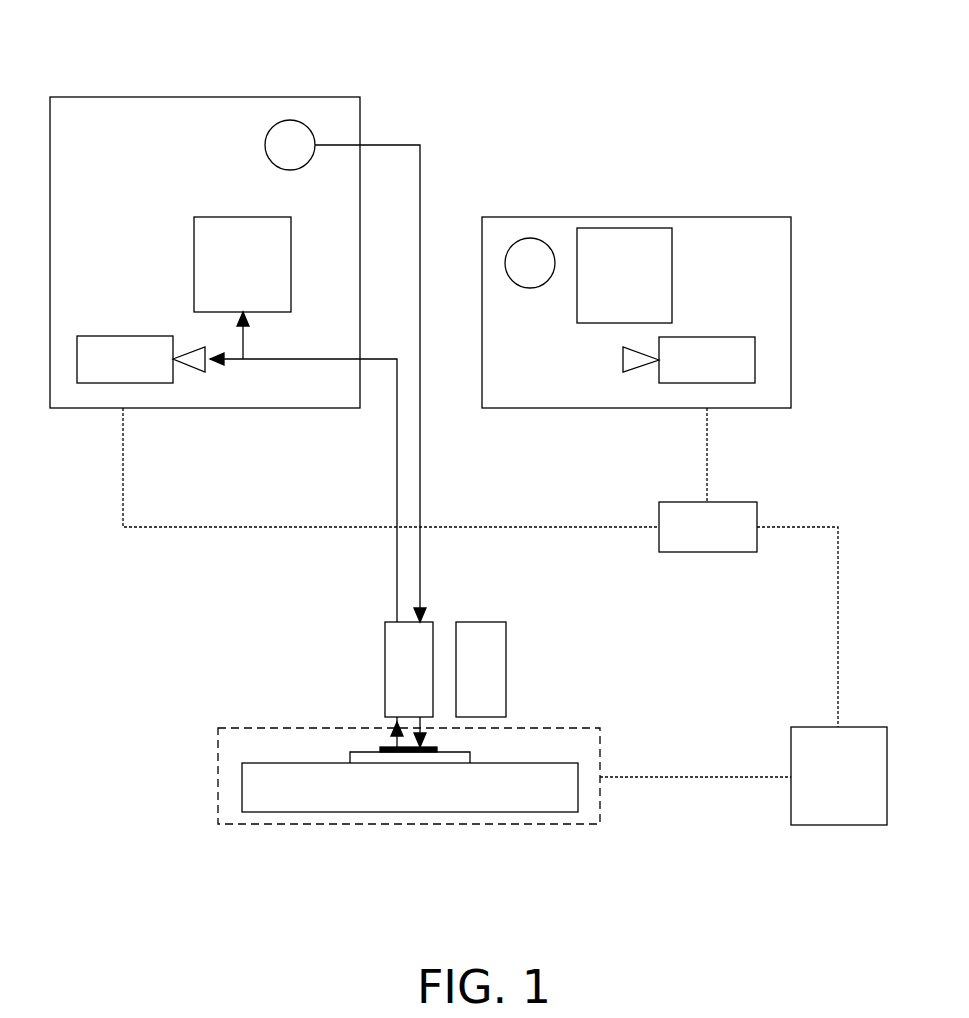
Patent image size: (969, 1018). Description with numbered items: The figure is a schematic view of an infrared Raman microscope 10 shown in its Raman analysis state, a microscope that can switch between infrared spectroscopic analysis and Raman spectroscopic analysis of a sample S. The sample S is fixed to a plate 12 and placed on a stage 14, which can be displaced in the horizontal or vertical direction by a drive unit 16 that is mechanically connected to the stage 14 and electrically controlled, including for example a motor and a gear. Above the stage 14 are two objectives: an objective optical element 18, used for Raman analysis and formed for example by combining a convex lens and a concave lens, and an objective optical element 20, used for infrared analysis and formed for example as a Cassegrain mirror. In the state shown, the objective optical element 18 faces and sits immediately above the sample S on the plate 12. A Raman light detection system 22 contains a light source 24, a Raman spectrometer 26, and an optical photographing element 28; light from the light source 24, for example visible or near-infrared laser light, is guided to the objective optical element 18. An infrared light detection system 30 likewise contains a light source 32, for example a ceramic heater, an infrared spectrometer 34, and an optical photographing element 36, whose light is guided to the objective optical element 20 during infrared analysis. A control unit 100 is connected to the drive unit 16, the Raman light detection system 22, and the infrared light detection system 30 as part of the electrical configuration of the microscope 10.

The infrared Raman microscope 10 is at (427, 20).
The plate 12 is at (358, 752).
The stage 14 is at (362, 813).
The drive unit 16 is at (863, 727).
The objective optical element 18 is at (387, 668).
The objective optical element 20 is at (506, 667).
The Raman light detection system 22 is at (190, 99).
The light source 24 is at (290, 124).
The Raman spectrometer 26 is at (218, 227).
The optical photographing element 28 is at (123, 347).
The infrared light detection system 30 is at (743, 217).
The light source 32 is at (530, 245).
The infrared spectrometer 34 is at (647, 242).
The optical photographing element 36 is at (707, 347).
The control unit 100 is at (757, 508).
The sample S is at (392, 748).